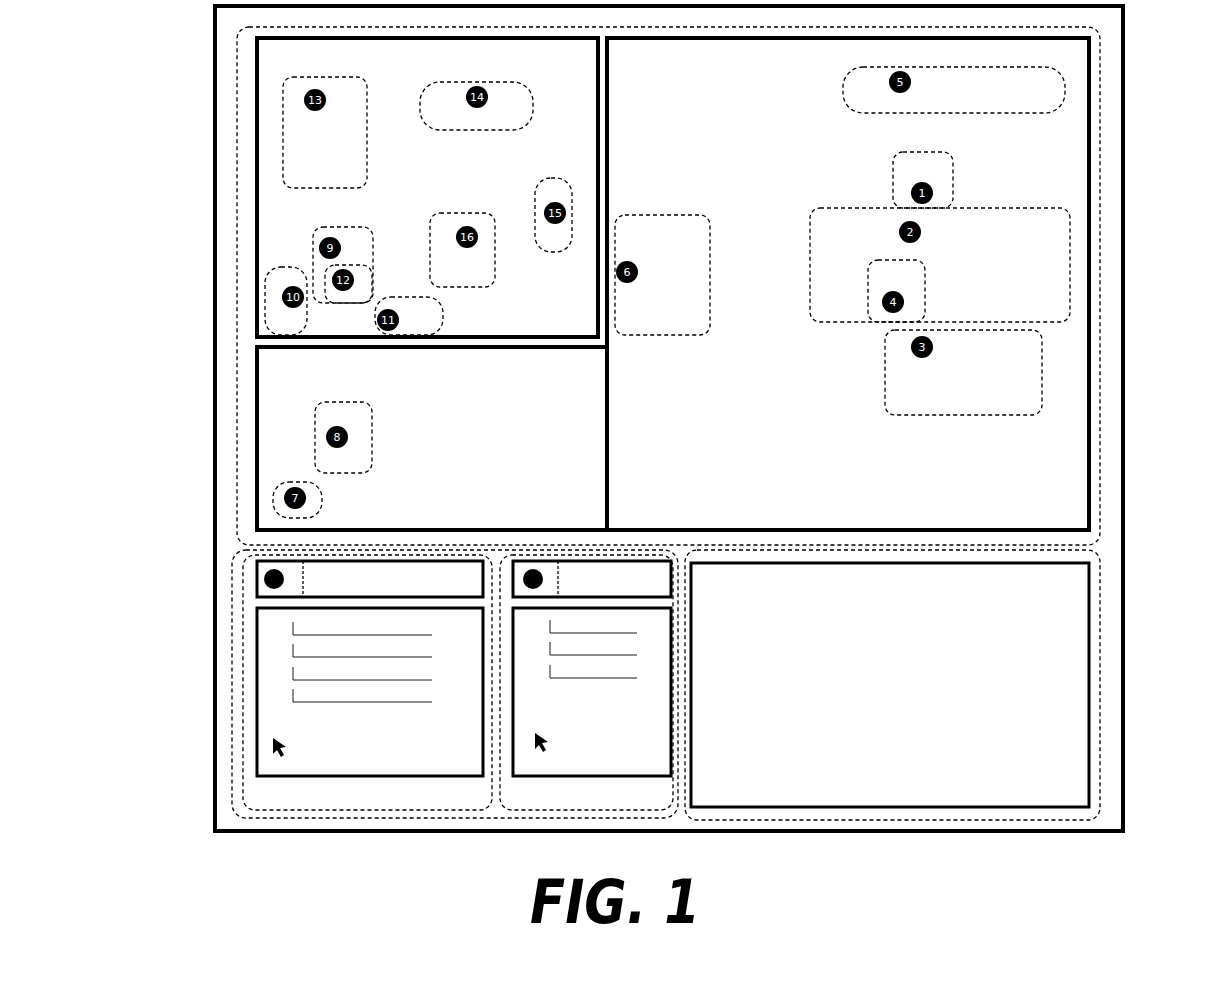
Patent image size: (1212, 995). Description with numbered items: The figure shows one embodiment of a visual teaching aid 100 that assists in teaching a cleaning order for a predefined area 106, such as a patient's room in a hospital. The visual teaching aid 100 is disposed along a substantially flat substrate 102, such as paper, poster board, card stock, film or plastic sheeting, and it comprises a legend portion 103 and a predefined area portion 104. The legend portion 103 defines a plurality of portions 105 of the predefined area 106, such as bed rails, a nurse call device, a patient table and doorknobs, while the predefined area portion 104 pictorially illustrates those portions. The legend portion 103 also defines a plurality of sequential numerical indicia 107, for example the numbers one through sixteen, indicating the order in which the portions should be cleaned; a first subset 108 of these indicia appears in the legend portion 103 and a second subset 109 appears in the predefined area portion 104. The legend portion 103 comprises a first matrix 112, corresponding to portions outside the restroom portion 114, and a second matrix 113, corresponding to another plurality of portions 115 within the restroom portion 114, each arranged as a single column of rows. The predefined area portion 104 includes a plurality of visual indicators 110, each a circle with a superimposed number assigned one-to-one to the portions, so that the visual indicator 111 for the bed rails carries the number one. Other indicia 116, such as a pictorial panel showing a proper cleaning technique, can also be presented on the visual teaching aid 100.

The visual teaching aid 100 is at (1125, 161).
The substantially flat substrate 102 is at (1108, 278).
The legend portion 103 is at (410, 820).
The predefined area portion 104 is at (1100, 395).
The plurality of portions 105 is at (868, 280).
The predefined area 106 is at (277, 418).
The plurality of sequential numerical indicia 107 is at (263, 673).
The first subset of the sequential numerical indicia 108 is at (283, 746).
The second subset of the sequential numerical indicia 109 is at (545, 741).
The plurality of visual indicators 110 is at (903, 302).
The visual indicator 111 is at (920, 166).
The first matrix 112 is at (303, 818).
The second matrix 113 is at (572, 812).
The restroom portion 114 is at (290, 210).
The another plurality of portions 115 is at (613, 633).
The other indicia 116 is at (1055, 773).